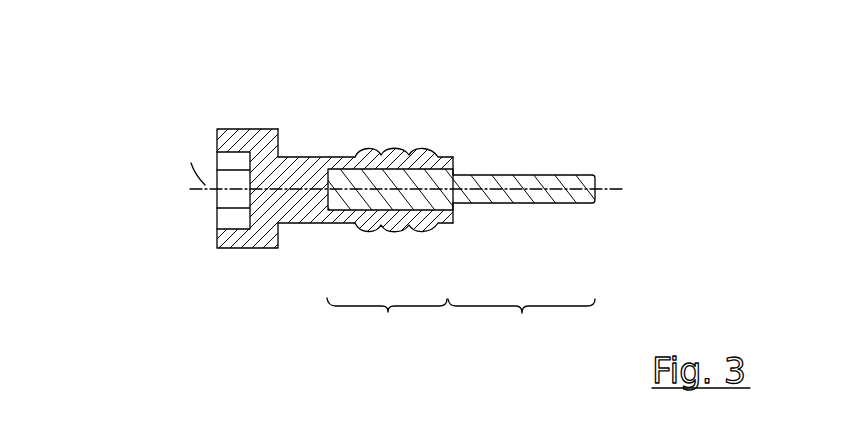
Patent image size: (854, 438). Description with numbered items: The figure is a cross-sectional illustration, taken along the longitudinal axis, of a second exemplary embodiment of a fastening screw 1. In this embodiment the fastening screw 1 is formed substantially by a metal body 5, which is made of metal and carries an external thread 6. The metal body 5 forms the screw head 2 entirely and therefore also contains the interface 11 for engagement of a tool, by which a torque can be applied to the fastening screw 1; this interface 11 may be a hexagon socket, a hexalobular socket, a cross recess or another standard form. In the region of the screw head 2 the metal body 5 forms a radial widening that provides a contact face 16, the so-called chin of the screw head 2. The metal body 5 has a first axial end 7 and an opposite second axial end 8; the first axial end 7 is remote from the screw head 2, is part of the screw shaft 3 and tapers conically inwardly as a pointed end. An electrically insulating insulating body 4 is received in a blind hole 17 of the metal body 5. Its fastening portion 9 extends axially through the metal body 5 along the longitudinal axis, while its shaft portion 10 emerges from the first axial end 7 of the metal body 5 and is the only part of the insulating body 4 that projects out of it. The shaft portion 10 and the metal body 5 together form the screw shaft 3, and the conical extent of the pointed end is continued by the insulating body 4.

The fastening screw 1 is at (346, 183).
The screw head 2 is at (243, 163).
The screw shaft 3 is at (436, 183).
The insulating body 4 is at (578, 174).
The metal body 5 is at (287, 225).
The external thread 6 is at (394, 144).
The first axial end 7 is at (452, 160).
The second axial end 8 is at (207, 236).
The fastening portion 9 is at (387, 326).
The shaft portion 10 is at (521, 326).
The interface 11 is at (224, 198).
The contact face 16 is at (282, 140).
The blind hole 17 is at (353, 211).